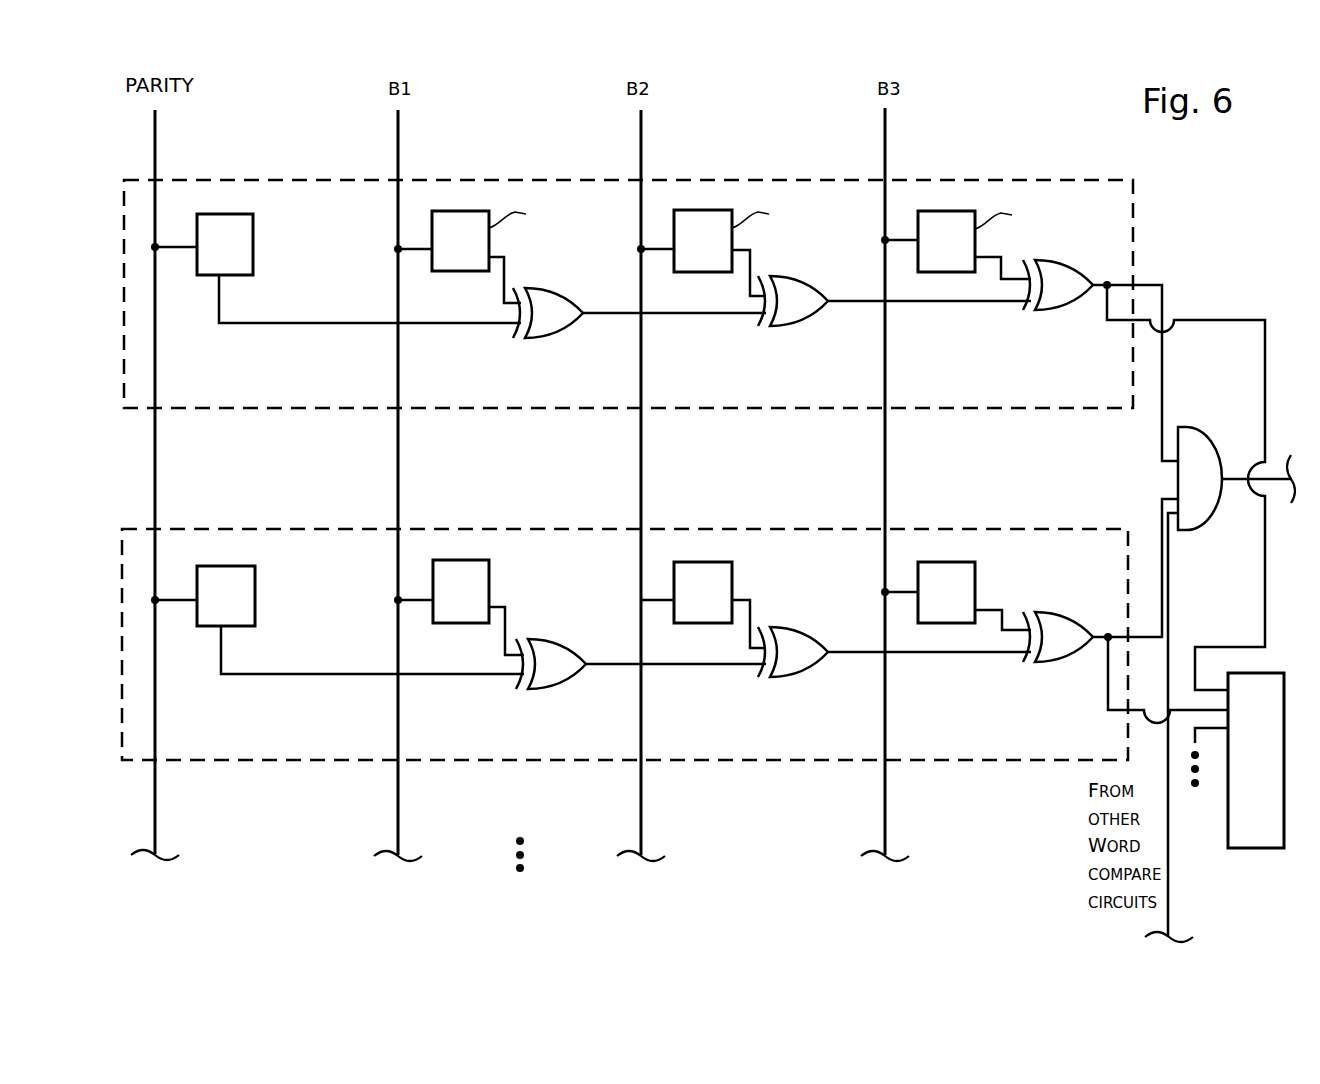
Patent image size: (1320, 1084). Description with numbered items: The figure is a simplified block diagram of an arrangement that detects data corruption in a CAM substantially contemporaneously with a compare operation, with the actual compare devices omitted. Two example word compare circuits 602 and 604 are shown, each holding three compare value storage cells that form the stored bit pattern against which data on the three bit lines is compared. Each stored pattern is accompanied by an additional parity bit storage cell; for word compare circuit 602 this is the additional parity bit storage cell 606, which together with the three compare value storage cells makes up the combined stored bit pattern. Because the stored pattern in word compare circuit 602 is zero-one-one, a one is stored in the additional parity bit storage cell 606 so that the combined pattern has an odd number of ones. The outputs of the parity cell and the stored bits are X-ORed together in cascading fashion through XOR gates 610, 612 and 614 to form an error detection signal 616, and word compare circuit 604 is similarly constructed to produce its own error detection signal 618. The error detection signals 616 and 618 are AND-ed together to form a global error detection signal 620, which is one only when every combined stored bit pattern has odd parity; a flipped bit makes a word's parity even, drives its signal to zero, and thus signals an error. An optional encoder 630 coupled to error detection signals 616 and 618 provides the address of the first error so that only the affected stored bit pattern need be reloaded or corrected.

The word compare circuit 602 is at (140, 178).
The word compare circuit 604 is at (130, 528).
The additional parity bit storage cell 606 is at (253, 241).
The XOR gate 610 is at (572, 322).
The XOR gate 612 is at (815, 312).
The XOR gate 614 is at (1056, 305).
The error detection signal 616 is at (1142, 284).
The error detection signal 618 is at (1160, 499).
The global error detection signal 620 is at (1241, 478).
The encoder 630 is at (1236, 841).